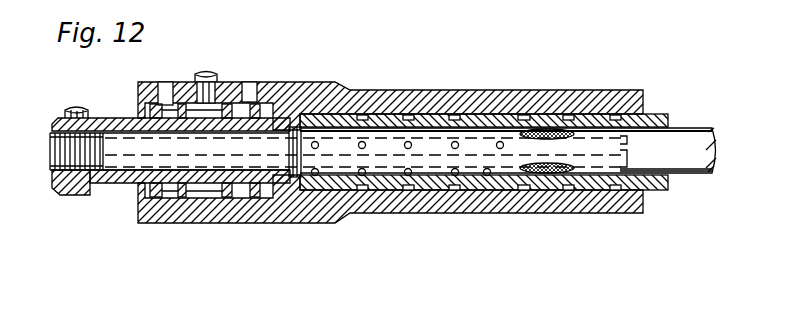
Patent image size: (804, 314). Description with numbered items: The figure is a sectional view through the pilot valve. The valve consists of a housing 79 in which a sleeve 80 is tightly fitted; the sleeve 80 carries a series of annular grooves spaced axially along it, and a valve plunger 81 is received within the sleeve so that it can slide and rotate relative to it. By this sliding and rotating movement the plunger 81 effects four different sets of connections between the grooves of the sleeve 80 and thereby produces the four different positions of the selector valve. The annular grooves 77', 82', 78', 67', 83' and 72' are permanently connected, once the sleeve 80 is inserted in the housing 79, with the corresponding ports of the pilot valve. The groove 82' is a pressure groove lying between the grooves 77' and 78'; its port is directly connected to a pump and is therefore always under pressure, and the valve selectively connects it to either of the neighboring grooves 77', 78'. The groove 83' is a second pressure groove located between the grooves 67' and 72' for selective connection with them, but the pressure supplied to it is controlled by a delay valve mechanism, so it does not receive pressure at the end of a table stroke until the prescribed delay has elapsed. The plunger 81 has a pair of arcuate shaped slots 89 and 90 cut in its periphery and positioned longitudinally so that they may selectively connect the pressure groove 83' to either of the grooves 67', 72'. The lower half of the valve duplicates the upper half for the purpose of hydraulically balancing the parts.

The annular groove 67' is at (536, 126).
The annular groove 72' is at (628, 127).
The annular groove 77' is at (371, 126).
The annular groove 78' is at (390, 141).
The housing 79 is at (460, 114).
The sleeve 80 is at (655, 114).
The valve plunger 81 is at (693, 140).
The annular groove 82' is at (412, 129).
The annular groove 83' is at (580, 128).
The arcuate shaped slot 89 is at (548, 175).
The arcuate shaped slot 90 is at (550, 134).